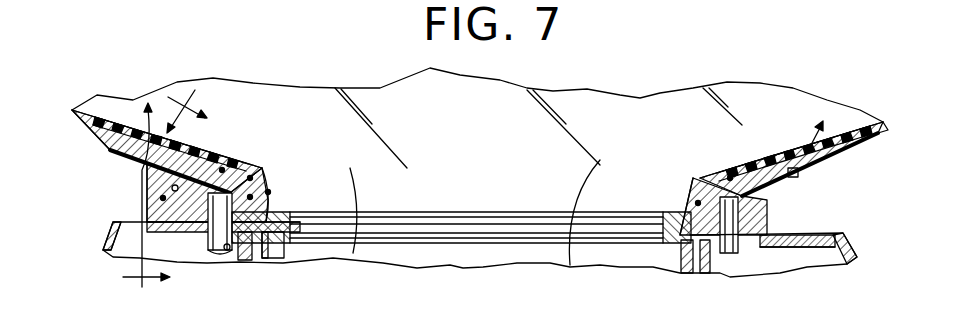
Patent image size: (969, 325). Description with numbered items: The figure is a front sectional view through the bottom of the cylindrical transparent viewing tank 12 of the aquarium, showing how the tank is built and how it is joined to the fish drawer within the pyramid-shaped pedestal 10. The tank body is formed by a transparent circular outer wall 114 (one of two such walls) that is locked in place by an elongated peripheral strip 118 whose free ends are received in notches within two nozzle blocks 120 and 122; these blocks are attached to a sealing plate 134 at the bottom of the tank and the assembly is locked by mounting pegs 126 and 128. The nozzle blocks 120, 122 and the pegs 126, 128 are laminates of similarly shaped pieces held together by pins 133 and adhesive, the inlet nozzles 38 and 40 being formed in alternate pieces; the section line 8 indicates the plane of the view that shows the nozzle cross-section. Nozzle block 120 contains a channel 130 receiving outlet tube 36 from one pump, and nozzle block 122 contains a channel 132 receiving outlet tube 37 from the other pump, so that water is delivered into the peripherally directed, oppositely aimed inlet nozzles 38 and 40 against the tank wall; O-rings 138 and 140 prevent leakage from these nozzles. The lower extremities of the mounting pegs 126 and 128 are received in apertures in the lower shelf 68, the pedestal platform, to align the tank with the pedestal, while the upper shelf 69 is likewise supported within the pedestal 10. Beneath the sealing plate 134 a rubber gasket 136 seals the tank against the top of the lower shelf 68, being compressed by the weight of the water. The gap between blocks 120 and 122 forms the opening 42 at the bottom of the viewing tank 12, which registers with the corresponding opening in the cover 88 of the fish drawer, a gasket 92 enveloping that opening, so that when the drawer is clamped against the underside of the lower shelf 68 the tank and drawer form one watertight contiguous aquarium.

The upper shelf 69 is at (219, 8).
The section line 8— 8 is at (150, 174).
The transparent circular outer wall 114 is at (350, 94).
The opening 42 is at (503, 253).
The inlet nozzle 38 is at (180, 150).
The elongated peripheral strip 118 is at (110, 148).
The channel 130 is at (250, 176).
The nozzle block 120 is at (262, 182).
The pins 133 is at (224, 167).
The mounting peg 128 is at (141, 200).
The pyramid-shaped pedestal 10 is at (106, 233).
The lower shelf 68 is at (187, 237).
The outlet tube 36 is at (218, 265).
The O-ring 138 is at (237, 243).
The rubber gasket 136 is at (283, 214).
The gasket 92 is at (285, 250).
The cover 88 is at (472, 234).
The nozzle block 122 is at (703, 175).
The sealing plate 134 is at (674, 222).
The channel 132 is at (739, 195).
The inlet nozzle 40 is at (791, 162).
The cylindrical transparent viewing tank 12 is at (857, 165).
The O-ring 140 is at (730, 290).
The outlet tube 37 is at (742, 245).
The mounting peg 126 is at (807, 221).